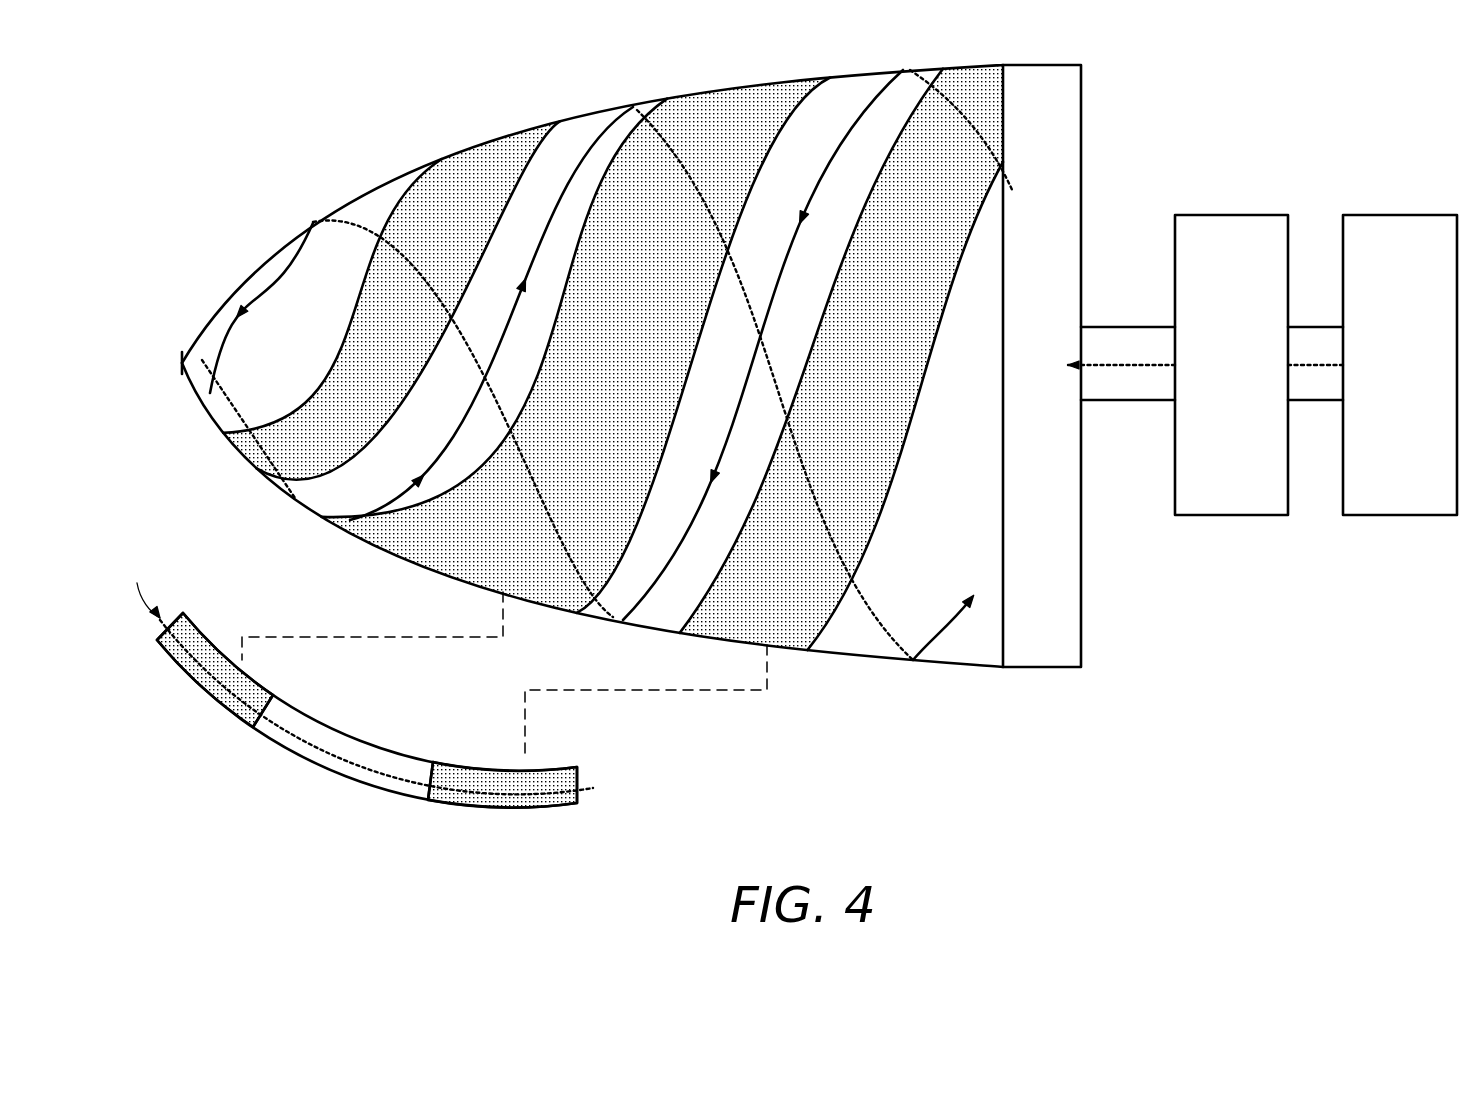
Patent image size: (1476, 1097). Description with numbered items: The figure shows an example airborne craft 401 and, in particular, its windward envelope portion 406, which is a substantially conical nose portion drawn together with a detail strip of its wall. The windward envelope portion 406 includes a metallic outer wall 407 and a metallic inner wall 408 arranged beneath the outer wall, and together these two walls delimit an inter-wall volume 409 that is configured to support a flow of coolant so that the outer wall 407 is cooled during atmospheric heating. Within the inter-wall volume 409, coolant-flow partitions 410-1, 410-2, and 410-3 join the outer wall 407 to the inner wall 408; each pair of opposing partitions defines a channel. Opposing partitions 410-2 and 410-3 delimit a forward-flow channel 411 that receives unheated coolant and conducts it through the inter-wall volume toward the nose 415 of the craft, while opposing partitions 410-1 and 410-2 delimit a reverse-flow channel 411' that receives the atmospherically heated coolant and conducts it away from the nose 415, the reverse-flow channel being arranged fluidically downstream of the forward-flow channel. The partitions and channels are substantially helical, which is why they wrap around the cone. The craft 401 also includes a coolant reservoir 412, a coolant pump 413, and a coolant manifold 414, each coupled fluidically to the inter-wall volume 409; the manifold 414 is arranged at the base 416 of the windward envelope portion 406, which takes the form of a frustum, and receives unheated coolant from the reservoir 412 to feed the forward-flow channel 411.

The airborne craft 401 is at (1390, 695).
The windward envelope portion 406 is at (1137, 169).
The metallic outer wall 407 is at (321, 817).
The metallic inner wall 408 is at (367, 187).
The inter-wall volume 409 is at (594, 788).
The coolant-flow partition 410-1 is at (497, 218).
The coolant-flow partition 410-2 is at (690, 276).
The coolant-flow partition 410-3 is at (935, 276).
The forward-flow channel 411 is at (578, 469).
The reverse-flow channel 411' is at (491, 313).
The coolant reservoir 412 is at (1420, 376).
The coolant pump 413 is at (1252, 376).
The coolant manifold 414 is at (1062, 376).
The nose 415 is at (182, 363).
The base 416 is at (985, 678).